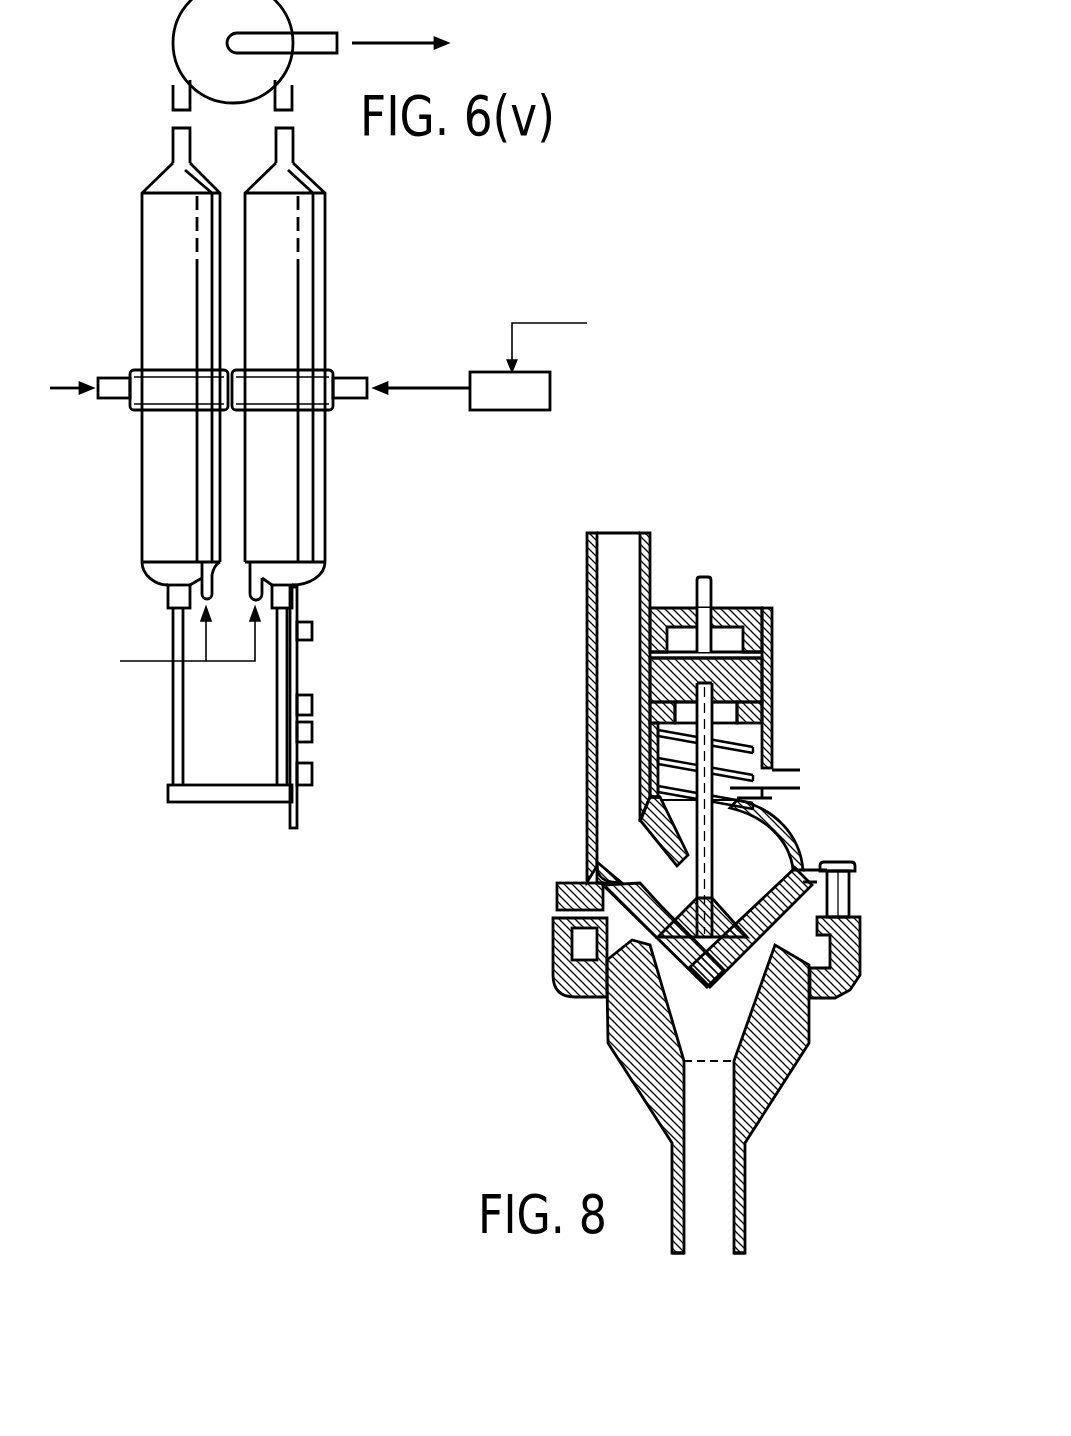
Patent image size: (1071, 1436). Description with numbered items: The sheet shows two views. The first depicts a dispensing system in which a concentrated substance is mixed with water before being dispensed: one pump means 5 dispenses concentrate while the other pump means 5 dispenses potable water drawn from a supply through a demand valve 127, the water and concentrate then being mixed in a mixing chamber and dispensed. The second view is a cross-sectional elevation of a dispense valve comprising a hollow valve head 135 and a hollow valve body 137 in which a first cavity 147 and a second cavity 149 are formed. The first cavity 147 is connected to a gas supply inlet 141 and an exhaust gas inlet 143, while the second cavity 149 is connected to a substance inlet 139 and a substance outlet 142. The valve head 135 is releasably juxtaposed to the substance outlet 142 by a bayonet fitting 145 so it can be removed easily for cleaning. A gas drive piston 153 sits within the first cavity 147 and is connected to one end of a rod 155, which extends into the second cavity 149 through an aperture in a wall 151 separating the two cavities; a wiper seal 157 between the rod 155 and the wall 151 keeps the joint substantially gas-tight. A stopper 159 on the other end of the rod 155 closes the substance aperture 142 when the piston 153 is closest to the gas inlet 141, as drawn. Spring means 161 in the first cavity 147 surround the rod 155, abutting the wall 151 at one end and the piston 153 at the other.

The pump means 5 is at (151, 460).
The demand valve 127 is at (552, 391).
In FIG. 8, the hollow valve head 135 is at (764, 1110).
In FIG. 8, the hollow valve body 137 is at (870, 937).
In FIG. 8, the substance inlet 139 is at (633, 517).
In FIG. 8, the gas supply inlet 141 is at (706, 557).
In FIG. 8, the substance outlet 142 is at (764, 1069).
In FIG. 8, the exhaust gas inlet 143 is at (819, 777).
In FIG. 8, the bayonet fitting 145 is at (560, 990).
In FIG. 8, the first cavity 147 is at (752, 733).
In FIG. 8, the second cavity 149 is at (640, 837).
In FIG. 8, the wall 151 is at (708, 845).
In FIG. 8, the gas drive piston 153 is at (760, 673).
In FIG. 8, the rod 155 is at (680, 865).
In FIG. 8, the wiper seal 157 is at (690, 763).
In FIG. 8, the stopper 159 is at (727, 1002).
In FIG. 8, the spring means 161 is at (660, 748).